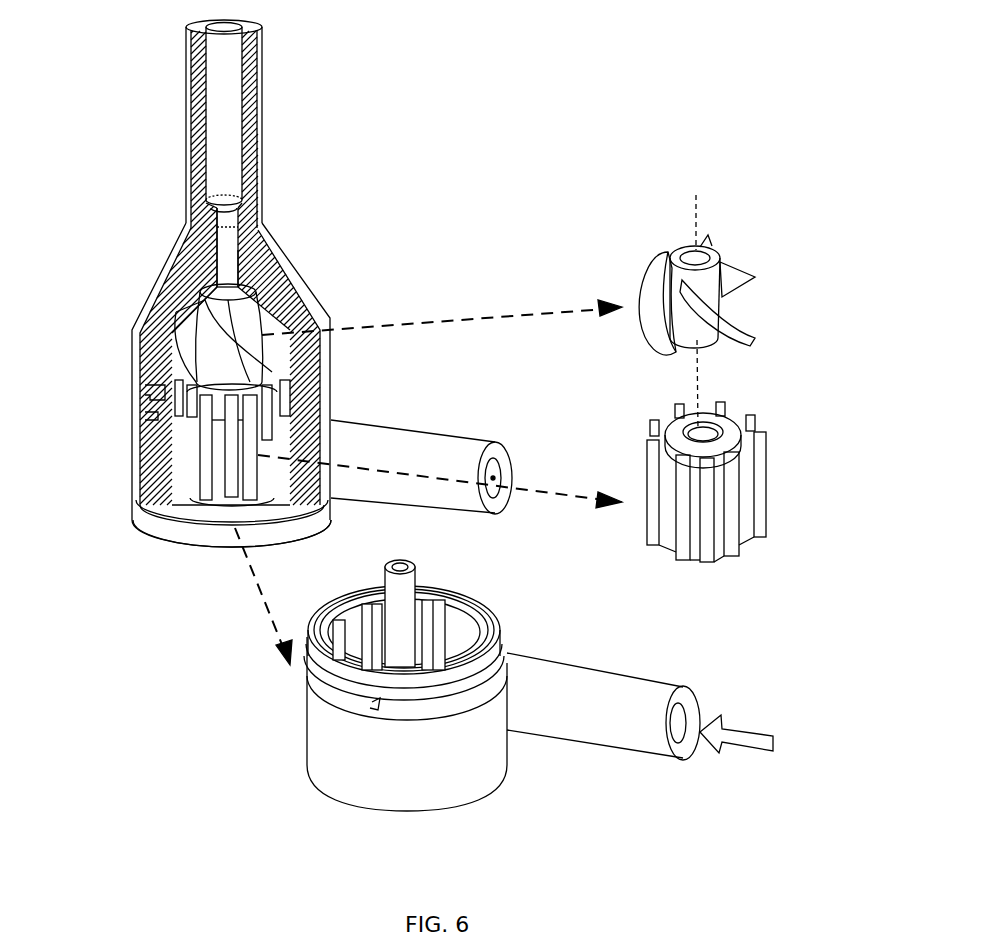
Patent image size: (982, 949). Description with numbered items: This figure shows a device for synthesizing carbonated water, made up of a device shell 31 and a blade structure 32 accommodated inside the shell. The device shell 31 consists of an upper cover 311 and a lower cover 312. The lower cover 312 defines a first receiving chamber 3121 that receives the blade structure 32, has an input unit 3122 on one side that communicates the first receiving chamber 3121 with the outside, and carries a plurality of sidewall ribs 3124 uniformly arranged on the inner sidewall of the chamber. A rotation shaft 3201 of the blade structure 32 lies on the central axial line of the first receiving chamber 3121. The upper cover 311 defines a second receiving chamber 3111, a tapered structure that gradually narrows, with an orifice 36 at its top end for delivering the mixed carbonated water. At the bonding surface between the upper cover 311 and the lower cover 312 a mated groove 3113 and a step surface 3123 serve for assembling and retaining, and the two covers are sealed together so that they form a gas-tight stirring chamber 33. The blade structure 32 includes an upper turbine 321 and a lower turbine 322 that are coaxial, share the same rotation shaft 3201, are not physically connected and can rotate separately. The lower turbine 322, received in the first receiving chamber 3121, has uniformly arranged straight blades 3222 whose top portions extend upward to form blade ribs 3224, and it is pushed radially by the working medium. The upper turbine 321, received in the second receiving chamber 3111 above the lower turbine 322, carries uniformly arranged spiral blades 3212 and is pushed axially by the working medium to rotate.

The device shell 31 is at (146, 343).
The upper cover 311 is at (276, 281).
The second receiving chamber 3111 is at (243, 275).
The mated groove 3113 is at (157, 405).
The blade structure 32 is at (184, 441).
The stirring chamber 33 is at (189, 502).
The orifice 36 is at (228, 262).
The upper turbine 321 is at (777, 208).
The spiral blade 3212 is at (651, 293).
The lower turbine 322 is at (799, 392).
The straight blade 3222 is at (732, 527).
The blade rib 3224 is at (751, 460).
The lower cover 312 is at (253, 793).
The first receiving chamber 3121 is at (453, 630).
The input unit 3122 is at (550, 705).
The step surface 3123 is at (383, 703).
The sidewall rib 3124 is at (427, 615).
The rotation shaft 3201 is at (394, 600).